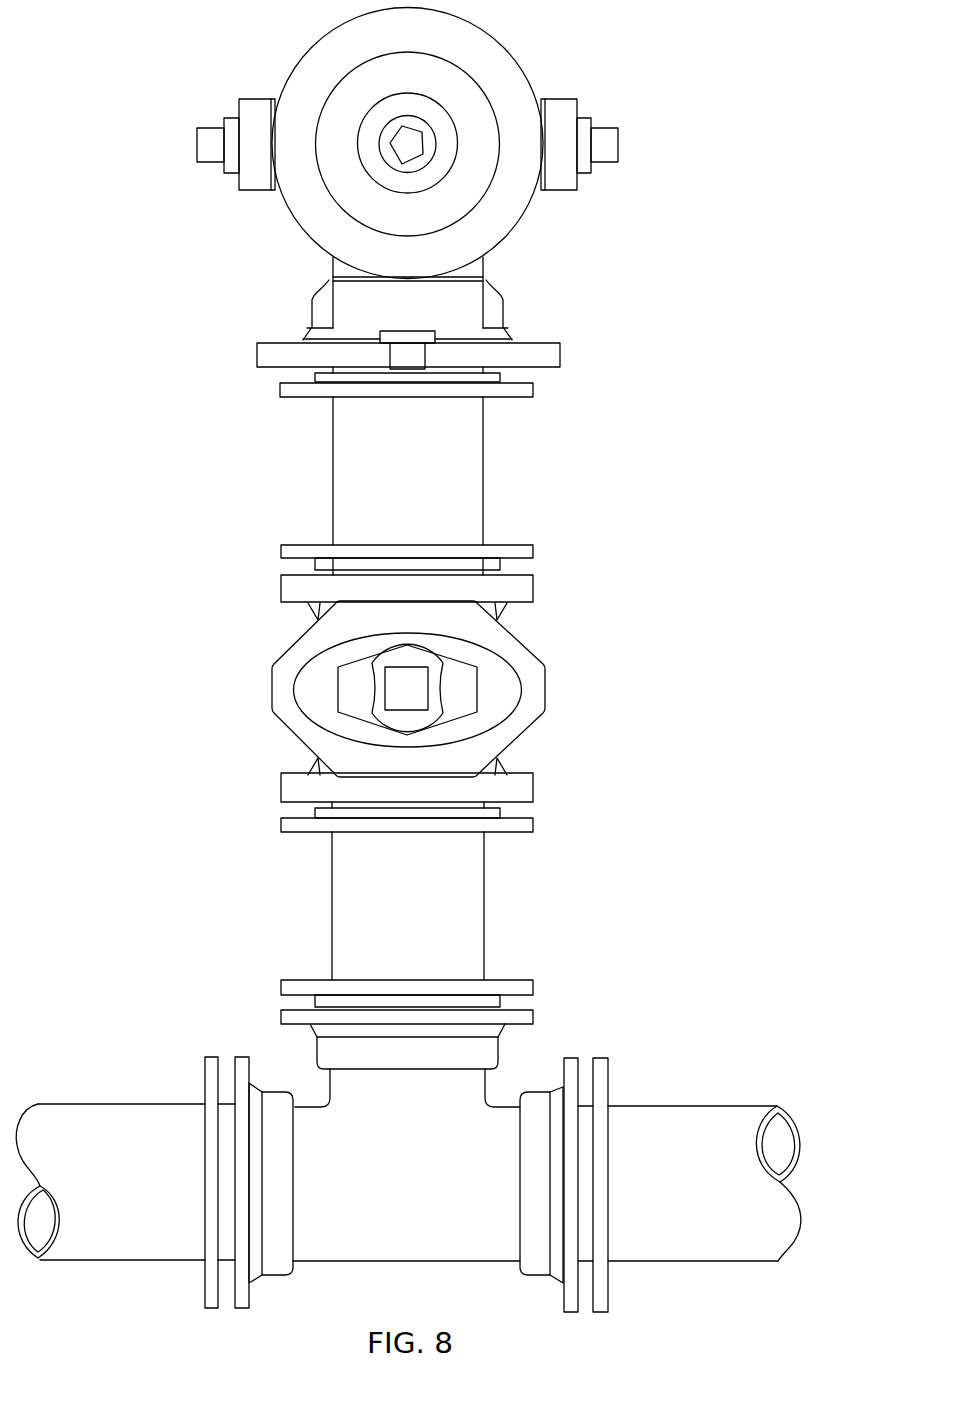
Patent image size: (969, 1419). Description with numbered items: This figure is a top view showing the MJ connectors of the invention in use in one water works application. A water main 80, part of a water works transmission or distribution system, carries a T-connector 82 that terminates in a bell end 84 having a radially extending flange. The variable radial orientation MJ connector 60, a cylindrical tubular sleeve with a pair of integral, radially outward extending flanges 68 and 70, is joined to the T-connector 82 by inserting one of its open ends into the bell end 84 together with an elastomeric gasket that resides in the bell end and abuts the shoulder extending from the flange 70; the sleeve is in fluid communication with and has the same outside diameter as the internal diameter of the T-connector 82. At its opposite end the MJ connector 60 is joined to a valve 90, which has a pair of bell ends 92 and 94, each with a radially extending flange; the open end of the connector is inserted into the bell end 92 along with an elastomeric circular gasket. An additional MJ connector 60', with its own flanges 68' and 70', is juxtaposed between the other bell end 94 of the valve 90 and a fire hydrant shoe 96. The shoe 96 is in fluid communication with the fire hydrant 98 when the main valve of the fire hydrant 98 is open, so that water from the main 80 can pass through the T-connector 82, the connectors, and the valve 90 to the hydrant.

The fire hydrant 98 is at (510, 87).
The fire hydrant shoe 96 is at (547, 347).
The flange 68' is at (469, 390).
The additional MJ connector 60' is at (494, 471).
The flange 70' is at (473, 552).
The bell end 94 is at (527, 593).
The valve 90 is at (537, 690).
The bell end 92 is at (527, 788).
The flange 68 is at (469, 830).
The variable radial orientation MJ connector 60 is at (486, 891).
The flange 70 is at (447, 996).
The bell end 84 is at (482, 1055).
The T-connector 82 is at (488, 1140).
The water main 80 is at (157, 1122).